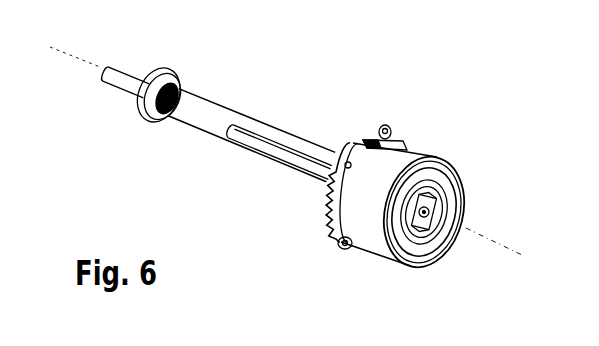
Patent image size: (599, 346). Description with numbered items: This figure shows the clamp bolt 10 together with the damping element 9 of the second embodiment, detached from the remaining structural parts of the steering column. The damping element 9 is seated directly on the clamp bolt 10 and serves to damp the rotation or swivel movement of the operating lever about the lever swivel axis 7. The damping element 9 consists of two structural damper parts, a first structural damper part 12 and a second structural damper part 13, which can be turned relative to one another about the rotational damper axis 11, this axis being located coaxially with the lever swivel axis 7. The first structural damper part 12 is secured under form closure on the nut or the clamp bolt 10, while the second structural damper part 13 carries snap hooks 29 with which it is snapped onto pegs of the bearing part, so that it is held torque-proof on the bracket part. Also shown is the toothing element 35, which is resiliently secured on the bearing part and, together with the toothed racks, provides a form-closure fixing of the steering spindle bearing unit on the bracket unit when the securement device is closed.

The lever swivel axis 7 is at (77, 57).
The clamp bolt 10 is at (197, 107).
The snap hooks 29 is at (374, 135).
The second structural damper part 13 is at (421, 156).
The first structural damper part 12 is at (436, 190).
The rotational damper axis 11 is at (494, 242).
The damping element 9 is at (372, 259).
The toothing element 35 is at (333, 183).